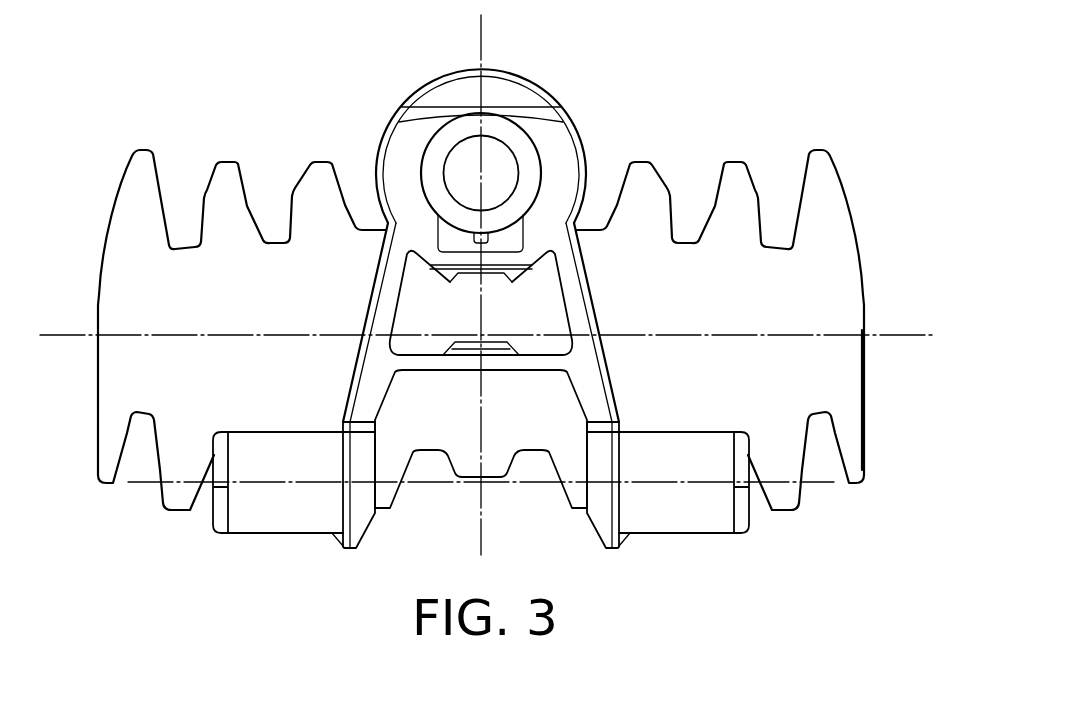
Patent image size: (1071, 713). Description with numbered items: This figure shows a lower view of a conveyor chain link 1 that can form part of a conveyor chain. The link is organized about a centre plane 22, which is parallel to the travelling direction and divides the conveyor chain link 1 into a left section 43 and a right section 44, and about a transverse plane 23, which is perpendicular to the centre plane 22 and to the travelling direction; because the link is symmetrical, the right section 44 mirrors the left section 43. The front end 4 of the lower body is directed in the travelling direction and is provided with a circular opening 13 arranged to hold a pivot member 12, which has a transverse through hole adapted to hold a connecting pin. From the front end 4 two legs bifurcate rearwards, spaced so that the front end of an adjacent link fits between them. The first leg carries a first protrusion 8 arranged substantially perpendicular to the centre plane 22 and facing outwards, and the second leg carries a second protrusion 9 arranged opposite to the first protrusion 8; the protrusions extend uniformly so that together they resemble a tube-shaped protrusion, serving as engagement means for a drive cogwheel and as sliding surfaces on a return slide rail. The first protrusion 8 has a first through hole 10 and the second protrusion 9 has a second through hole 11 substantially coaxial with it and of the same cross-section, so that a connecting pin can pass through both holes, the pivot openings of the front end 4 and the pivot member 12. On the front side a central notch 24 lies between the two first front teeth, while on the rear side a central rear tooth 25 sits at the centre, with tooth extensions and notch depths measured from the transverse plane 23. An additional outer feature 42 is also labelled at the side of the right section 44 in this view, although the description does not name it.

The conveyor chain link 1 is at (310, 67).
The front end 4 is at (395, 92).
The centre plane 22 is at (481, 50).
The central notch 24 is at (497, 153).
The pivot member 12 is at (557, 144).
The circular opening 13 is at (548, 158).
The left section 43 is at (158, 288).
The right section 44 is at (807, 307).
The transverse plane 23 is at (887, 337).
The side wall 42 is at (861, 413).
The first through hole 10 is at (233, 519).
The first protrusion 8 is at (282, 507).
The central rear tooth 25 is at (467, 462).
The second protrusion 9 is at (678, 507).
The second through hole 11 is at (735, 520).